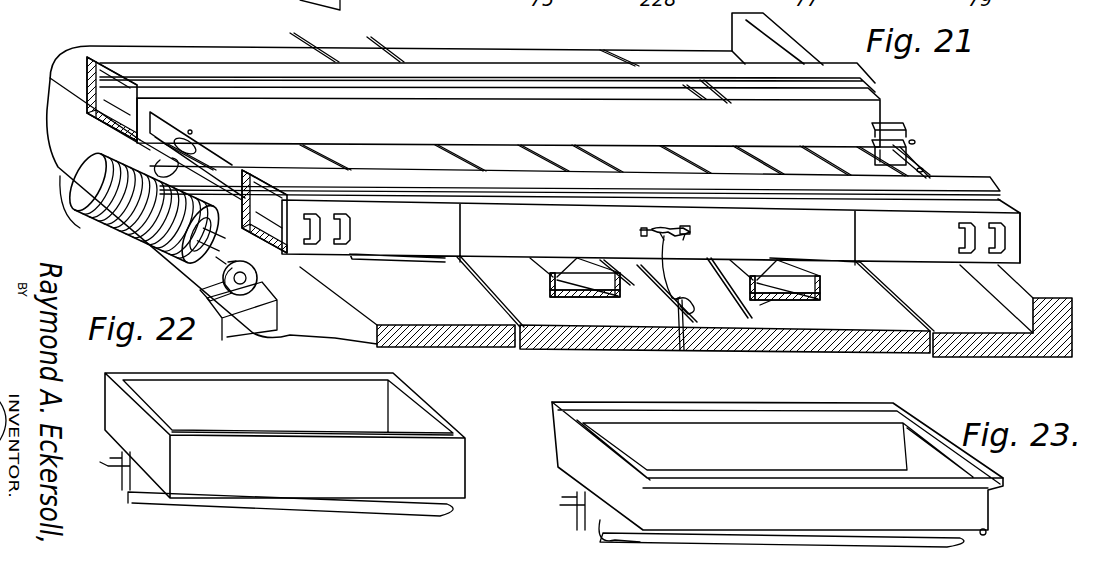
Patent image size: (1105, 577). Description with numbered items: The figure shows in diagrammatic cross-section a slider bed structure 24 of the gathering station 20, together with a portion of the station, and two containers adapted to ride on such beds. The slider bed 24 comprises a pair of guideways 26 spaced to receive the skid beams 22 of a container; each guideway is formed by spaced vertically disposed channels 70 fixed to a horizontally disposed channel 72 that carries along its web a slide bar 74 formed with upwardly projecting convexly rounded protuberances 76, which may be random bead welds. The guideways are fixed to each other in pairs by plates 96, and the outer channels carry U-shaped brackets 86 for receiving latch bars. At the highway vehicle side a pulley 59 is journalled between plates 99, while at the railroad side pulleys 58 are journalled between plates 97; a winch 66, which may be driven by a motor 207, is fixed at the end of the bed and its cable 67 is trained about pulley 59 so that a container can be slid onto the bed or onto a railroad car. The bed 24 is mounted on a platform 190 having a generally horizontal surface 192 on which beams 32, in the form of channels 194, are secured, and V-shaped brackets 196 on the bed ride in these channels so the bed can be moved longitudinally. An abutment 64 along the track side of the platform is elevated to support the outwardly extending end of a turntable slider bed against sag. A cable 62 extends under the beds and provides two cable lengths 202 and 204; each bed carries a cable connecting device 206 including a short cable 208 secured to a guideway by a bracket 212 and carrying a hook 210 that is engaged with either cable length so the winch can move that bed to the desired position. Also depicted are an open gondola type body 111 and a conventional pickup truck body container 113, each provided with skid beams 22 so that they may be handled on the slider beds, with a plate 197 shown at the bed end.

In FIG. 21, the gathering station 20 is at (235, 43).
In FIG. 21, the slider bed structure 24 is at (507, 62).
In FIG. 21, the guideways 26 is at (83, 67).
In FIG. 21, the vertically disposed channels 70 is at (168, 65).
In FIG. 21, the horizontally disposed channel 72 is at (88, 127).
In FIG. 21, the slide bar 74 is at (90, 92).
In FIG. 21, the protuberances 76 is at (118, 97).
In FIG. 21, the pulley 59 is at (190, 143).
In FIG. 21, the plates 99 is at (227, 157).
In FIG. 21, the winch 66 is at (147, 230).
In FIG. 21, the cable 67 is at (98, 210).
In FIG. 21, the motor 207 is at (223, 278).
In FIG. 21, the U-shaped brackets 86 is at (353, 227).
In FIG. 21, the plates 96 is at (453, 245).
In FIG. 21, the beams 32 is at (548, 283).
In FIG. 21, the channels 194 is at (556, 296).
In FIG. 21, the V-shaped brackets 196 is at (567, 292).
In FIG. 21, the platform 190 is at (324, 320).
In FIG. 21, the horizontal surface 192 is at (483, 315).
In FIG. 21, the cable length 204 is at (658, 335).
In FIG. 21, the cable connecting device 206 is at (624, 232).
In FIG. 21, the short cable 208 is at (677, 262).
In FIG. 21, the bracket 212 is at (680, 230).
In FIG. 21, the hook 210 is at (677, 312).
In FIG. 21, the cable length 202 is at (697, 311).
In FIG. 21, the cable 62 is at (755, 306).
In FIG. 21, the plates 97 is at (917, 147).
In FIG. 21, the pulleys 58 is at (923, 170).
In FIG. 21, the end plate 197 is at (1027, 262).
In FIG. 21, the abutment 64 is at (1040, 284).
In FIG. 22, the skid beams 22 is at (128, 467).
In FIG. 23, the skid beams 22 is at (577, 507).
In FIG. 22, the open body 111 is at (343, 497).
In FIG. 23, the container 113 is at (577, 450).